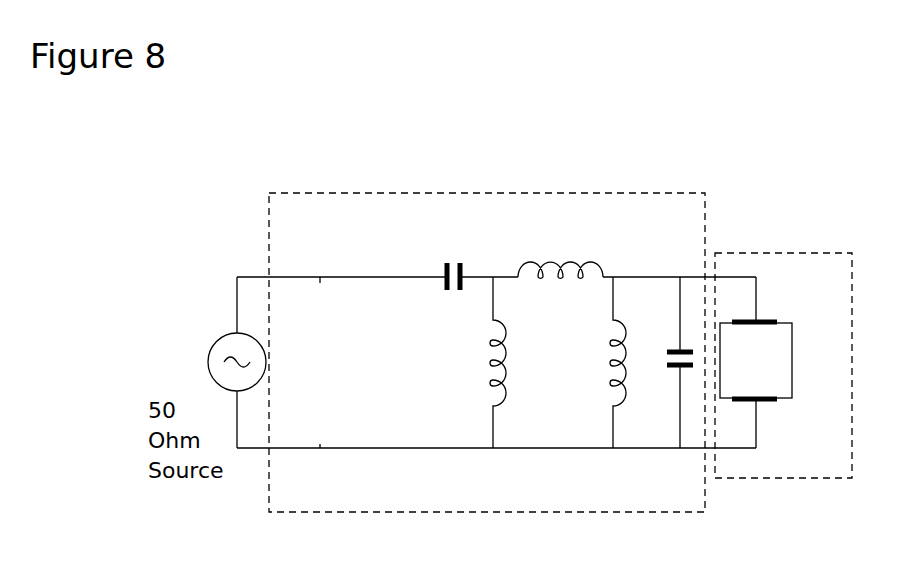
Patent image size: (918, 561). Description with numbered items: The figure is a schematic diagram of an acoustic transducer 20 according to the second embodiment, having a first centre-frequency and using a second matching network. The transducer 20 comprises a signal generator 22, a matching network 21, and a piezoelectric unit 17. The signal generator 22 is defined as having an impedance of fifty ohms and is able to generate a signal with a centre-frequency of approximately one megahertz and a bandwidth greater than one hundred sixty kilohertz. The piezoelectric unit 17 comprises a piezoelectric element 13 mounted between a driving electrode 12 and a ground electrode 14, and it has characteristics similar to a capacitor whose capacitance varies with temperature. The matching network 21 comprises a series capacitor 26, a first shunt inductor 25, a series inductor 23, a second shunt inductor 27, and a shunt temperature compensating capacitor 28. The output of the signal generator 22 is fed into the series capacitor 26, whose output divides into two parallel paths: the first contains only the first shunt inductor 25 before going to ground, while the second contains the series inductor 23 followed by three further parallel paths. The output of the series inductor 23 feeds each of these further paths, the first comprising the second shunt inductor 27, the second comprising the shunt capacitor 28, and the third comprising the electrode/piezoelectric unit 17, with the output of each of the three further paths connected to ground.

The transducer 20 is at (200, 202).
The matching network 21 is at (303, 224).
The signal generator 22 is at (213, 342).
The series inductor 23 is at (567, 277).
The first shunt inductor 25 is at (493, 360).
The series capacitor 26 is at (440, 290).
The second shunt inductor 27 is at (613, 360).
The shunt temperature compensating capacitor 28 is at (678, 346).
The piezoelectric unit 17 is at (837, 289).
The piezoelectric element 13 is at (767, 372).
The driving electrode 12 is at (773, 317).
The ground electrode 14 is at (765, 405).